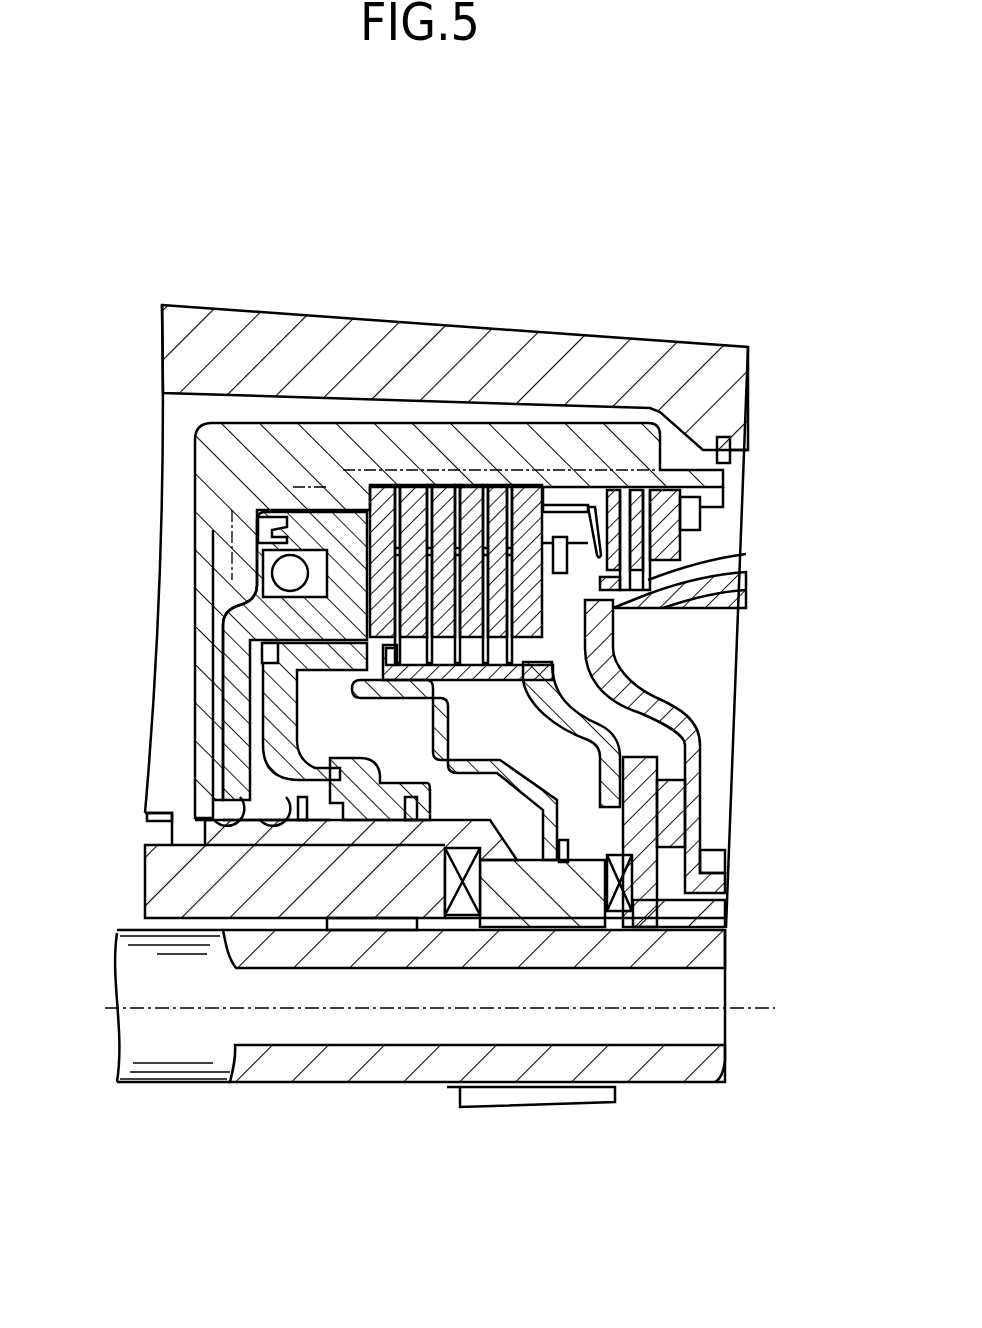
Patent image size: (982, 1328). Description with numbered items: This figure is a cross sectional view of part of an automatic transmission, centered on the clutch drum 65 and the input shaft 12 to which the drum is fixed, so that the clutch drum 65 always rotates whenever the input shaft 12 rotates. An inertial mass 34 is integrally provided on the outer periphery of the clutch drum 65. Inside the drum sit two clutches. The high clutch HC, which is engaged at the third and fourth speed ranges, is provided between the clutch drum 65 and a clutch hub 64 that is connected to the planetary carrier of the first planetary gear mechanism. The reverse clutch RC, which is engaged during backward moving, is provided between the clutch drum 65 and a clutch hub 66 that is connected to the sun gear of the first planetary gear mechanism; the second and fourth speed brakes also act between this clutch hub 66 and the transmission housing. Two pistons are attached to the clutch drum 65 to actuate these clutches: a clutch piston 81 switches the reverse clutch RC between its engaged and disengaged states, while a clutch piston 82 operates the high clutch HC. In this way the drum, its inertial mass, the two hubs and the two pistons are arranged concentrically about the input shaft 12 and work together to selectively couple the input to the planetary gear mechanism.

The input shaft 12 is at (340, 1067).
The inertial mass 34 is at (400, 432).
The high clutch HC is at (463, 493).
The reverse clutch RC is at (640, 540).
The clutch hub 64 is at (580, 717).
The clutch drum 65 is at (203, 638).
The clutch hub 66 is at (697, 597).
The clutch piston 81 is at (235, 708).
The clutch piston 82 is at (280, 725).